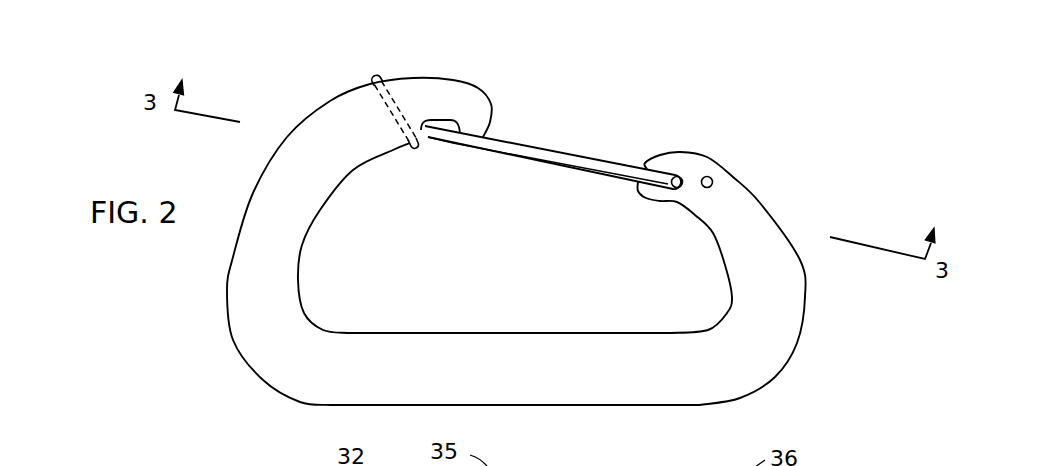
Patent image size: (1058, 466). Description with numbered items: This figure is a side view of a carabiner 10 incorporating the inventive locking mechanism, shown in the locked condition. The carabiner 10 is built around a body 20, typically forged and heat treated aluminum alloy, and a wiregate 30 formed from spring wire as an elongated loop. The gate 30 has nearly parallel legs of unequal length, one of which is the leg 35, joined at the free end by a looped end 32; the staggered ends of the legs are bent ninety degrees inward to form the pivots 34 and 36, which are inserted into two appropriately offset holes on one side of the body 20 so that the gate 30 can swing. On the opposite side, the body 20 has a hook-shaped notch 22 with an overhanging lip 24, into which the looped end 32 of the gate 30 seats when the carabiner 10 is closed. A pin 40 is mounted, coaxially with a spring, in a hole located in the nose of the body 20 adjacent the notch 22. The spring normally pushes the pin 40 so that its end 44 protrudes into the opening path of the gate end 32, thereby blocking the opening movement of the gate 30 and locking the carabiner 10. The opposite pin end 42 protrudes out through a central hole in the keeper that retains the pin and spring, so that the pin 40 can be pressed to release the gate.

The carabiner 10 is at (237, 177).
The body 20 is at (263, 380).
The hook-shaped notch 22 is at (438, 119).
The overhanging lip 24 is at (446, 148).
The wiregate 30 is at (545, 168).
The looped end 32 is at (421, 140).
The pivot 34 is at (676, 177).
The leg 35 is at (585, 161).
The pivot 36 is at (707, 178).
The pin 40 is at (406, 100).
The pin end 42 is at (373, 82).
The pin end 44 is at (417, 142).